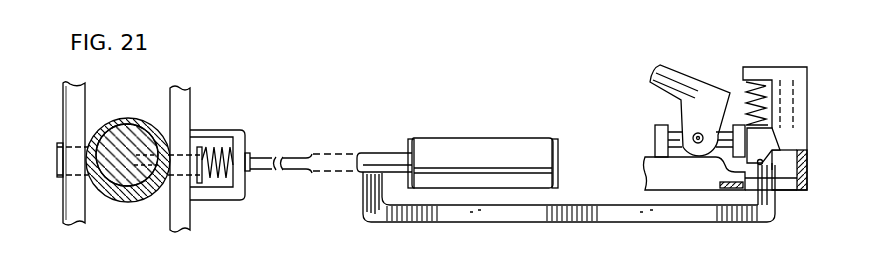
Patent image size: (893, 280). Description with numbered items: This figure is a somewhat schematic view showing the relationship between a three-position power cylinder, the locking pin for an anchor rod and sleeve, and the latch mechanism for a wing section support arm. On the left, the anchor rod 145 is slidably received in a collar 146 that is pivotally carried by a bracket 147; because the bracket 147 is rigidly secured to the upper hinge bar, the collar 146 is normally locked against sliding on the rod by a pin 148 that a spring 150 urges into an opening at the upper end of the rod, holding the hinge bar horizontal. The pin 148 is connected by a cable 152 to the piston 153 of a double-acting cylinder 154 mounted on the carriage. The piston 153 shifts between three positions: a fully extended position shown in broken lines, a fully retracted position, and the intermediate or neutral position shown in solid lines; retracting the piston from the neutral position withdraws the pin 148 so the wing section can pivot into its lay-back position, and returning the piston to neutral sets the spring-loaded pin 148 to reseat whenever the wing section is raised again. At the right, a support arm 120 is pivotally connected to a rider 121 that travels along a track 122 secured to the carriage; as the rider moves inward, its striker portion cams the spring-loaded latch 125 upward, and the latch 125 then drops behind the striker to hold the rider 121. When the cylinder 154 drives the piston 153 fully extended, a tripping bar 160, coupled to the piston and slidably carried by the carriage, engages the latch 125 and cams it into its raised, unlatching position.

The support arm 120 is at (657, 73).
The rider 121 is at (663, 124).
The track 122 is at (648, 170).
The spring-loaded latch 125 is at (768, 138).
The anchor rod 145 is at (114, 190).
The collar 146 is at (142, 201).
The bracket 147 is at (66, 92).
The pin 148 is at (148, 118).
The spring 150 is at (232, 150).
The cable 152 is at (299, 157).
The piston 153 is at (375, 156).
The double-acting cylinder 154 is at (470, 145).
The tripping bar 160 is at (530, 213).